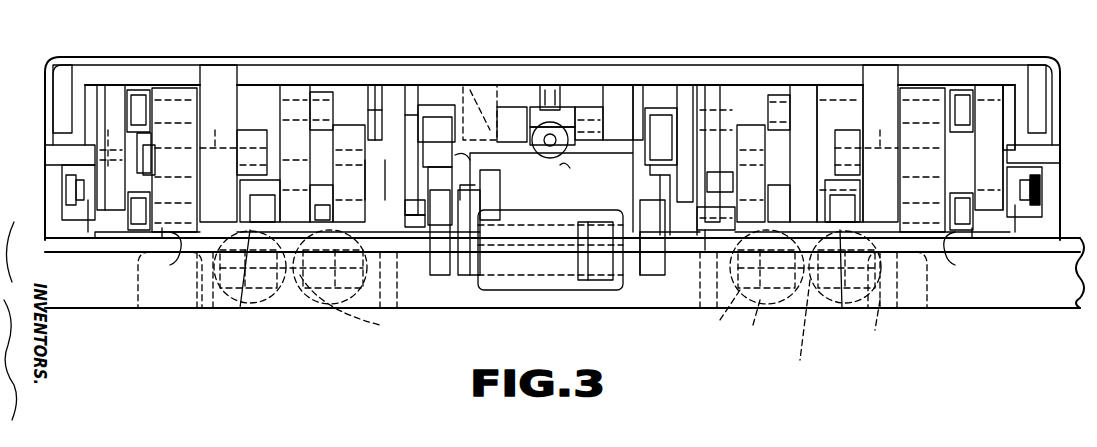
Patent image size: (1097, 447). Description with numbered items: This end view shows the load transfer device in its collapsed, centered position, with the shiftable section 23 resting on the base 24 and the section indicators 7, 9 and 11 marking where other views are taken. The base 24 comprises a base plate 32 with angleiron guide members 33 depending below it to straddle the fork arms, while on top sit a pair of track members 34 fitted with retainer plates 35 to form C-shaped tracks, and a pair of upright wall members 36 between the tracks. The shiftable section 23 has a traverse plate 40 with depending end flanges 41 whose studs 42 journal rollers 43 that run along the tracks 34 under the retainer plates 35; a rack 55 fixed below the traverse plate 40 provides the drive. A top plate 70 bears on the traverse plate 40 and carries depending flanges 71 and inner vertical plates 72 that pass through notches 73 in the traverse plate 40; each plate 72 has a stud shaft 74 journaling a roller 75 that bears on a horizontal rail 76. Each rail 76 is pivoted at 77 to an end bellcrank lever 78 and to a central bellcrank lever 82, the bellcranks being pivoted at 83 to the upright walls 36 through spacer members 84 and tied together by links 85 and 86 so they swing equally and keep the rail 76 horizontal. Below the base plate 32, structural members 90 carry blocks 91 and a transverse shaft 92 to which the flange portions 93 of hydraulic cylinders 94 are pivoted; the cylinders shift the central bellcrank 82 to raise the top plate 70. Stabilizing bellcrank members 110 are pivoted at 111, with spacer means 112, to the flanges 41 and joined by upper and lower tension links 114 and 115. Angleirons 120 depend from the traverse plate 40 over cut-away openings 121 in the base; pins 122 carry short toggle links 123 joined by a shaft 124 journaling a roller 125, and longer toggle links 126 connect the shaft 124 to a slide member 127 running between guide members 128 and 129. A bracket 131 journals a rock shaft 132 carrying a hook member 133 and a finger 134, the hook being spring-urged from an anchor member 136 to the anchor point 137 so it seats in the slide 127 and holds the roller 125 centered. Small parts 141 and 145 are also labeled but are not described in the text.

The section line 7- 7 is at (278, 45).
The section line 9- 9 is at (362, 45).
The section line 11- 11 is at (706, 45).
The shiftable section 23 is at (551, 46).
The base 24 is at (1075, 168).
The base plate 32 is at (1032, 245).
The guide members 33 is at (975, 300).
The track members 34 is at (71, 232).
The retainer plates 35 is at (52, 155).
The upright wall members 36 is at (350, 135).
The traverse plate 40 is at (990, 78).
The depending end flanges 41 is at (110, 95).
The studs 42 is at (162, 238).
The rollers 43 is at (84, 210).
The rack 55 is at (706, 252).
The top plate 70 is at (507, 60).
The depending flanges 71 is at (48, 88).
The vertical plates 72 is at (215, 70).
The notches 73 is at (293, 85).
The stud shaft 74 is at (550, 128).
The roller 75 is at (250, 135).
The rail members 76 is at (232, 300).
The pivot 77 is at (260, 205).
The bellcrank lever 78 is at (300, 95).
The bellcrank lever 82 is at (290, 302).
The bellcrank pivot 83 is at (718, 158).
The spacer member 84 is at (322, 190).
The link 85 is at (325, 98).
The link 86 is at (339, 215).
The structural members 90 is at (188, 290).
The blocks 91 is at (805, 328).
The transverse shaft 92 is at (750, 323).
The flange portions 93 is at (872, 324).
The cylinders 94 is at (520, 312).
The bellcrank members 110 is at (172, 92).
The pivot 111 is at (117, 147).
The spacer means 112 is at (150, 142).
The tension links 114 is at (139, 95).
The tension links 115 is at (180, 255).
The structural members 120 is at (412, 100).
The cut-away openings 121 is at (436, 262).
The pins 122 is at (470, 195).
The short toggle links 123 is at (469, 262).
The shaft 124 is at (590, 285).
The roller 125 is at (555, 295).
The longer toggle links 126 is at (465, 278).
The slide member 127 is at (607, 152).
The guide member 128 is at (460, 158).
The guide member 129 is at (438, 108).
The bracket 131 is at (505, 105).
The rock shaft 132 is at (473, 88).
The hook member 133 is at (585, 105).
The finger 134 is at (394, 112).
The anchor member 136 is at (548, 86).
The spring anchor 137 is at (545, 110).
The screw 141 is at (431, 201).
The nut 145 is at (431, 215).